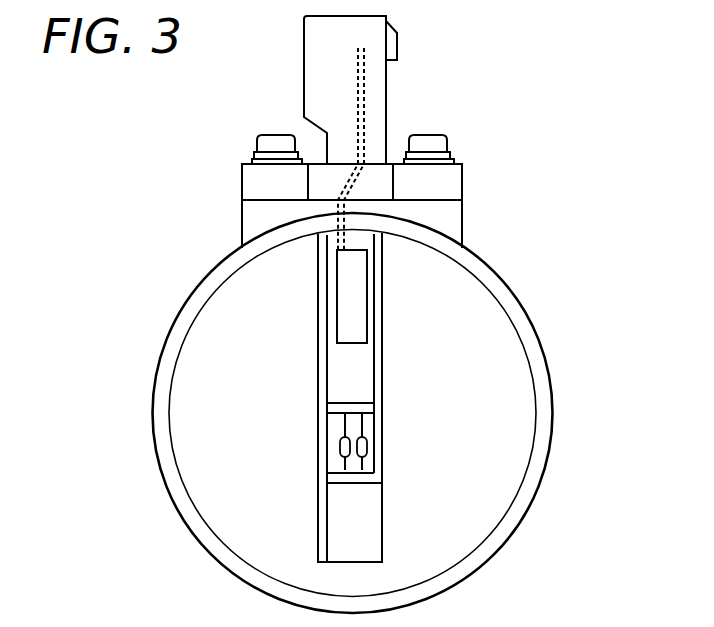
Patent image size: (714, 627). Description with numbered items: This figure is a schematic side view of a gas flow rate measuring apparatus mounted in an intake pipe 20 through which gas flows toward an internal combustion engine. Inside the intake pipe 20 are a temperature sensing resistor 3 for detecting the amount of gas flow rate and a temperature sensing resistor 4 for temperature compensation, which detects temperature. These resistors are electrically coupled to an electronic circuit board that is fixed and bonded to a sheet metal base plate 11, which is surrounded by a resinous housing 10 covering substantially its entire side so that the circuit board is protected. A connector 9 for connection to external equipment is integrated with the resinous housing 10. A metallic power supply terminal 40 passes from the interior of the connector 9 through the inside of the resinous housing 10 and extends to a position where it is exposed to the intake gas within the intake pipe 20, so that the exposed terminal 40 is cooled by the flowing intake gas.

The connector 9 is at (375, 88).
The intake pipe 20 is at (185, 500).
The base plate 11 is at (317, 370).
The resinous housing 10 is at (363, 370).
The metallic power supply terminal 40 is at (352, 295).
The temperature sensing resistor 3 is at (340, 449).
The temperature sensing resistor for temperature compensation 4 is at (370, 449).